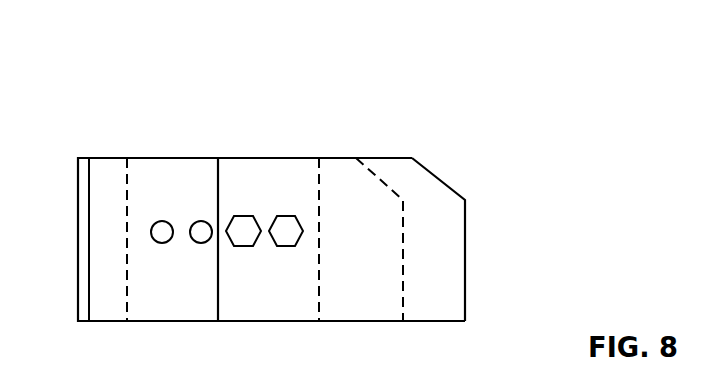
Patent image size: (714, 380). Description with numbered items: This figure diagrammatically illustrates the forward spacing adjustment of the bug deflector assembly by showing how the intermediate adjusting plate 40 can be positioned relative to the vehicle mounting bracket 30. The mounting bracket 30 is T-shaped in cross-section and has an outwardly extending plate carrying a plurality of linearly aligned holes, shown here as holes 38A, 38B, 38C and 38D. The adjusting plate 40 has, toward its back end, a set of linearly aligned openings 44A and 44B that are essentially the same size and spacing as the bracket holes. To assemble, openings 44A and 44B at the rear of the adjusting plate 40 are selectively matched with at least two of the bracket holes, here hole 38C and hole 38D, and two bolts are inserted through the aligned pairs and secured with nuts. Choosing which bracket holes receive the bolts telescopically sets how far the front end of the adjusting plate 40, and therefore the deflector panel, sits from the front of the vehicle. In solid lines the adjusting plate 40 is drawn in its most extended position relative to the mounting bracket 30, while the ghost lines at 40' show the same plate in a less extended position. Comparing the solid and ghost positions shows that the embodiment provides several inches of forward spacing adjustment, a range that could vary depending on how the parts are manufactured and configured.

The vehicle mounting bracket 30 is at (96, 158).
The hole of mounting bracket 38A is at (161, 230).
The hole of mounting bracket 38B is at (205, 230).
The opening of adjusting plate 44A is at (237, 164).
The hole of mounting bracket 38C is at (245, 216).
The opening of adjusting plate 44B is at (317, 135).
The hole of mounting bracket 38D is at (293, 216).
The adjusting plate in less extended position 40' is at (379, 202).
The intermediate adjusting plate 40 is at (446, 210).